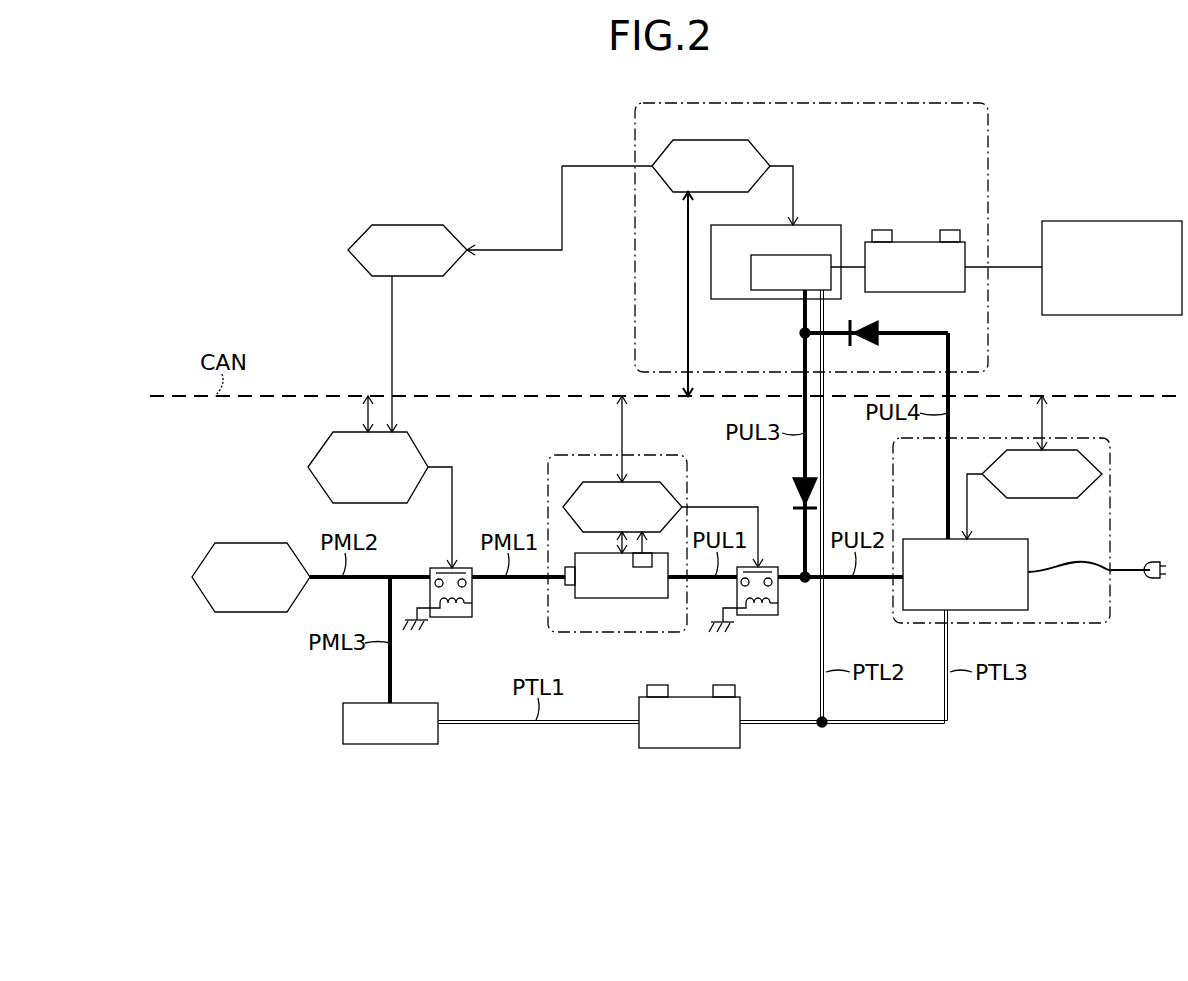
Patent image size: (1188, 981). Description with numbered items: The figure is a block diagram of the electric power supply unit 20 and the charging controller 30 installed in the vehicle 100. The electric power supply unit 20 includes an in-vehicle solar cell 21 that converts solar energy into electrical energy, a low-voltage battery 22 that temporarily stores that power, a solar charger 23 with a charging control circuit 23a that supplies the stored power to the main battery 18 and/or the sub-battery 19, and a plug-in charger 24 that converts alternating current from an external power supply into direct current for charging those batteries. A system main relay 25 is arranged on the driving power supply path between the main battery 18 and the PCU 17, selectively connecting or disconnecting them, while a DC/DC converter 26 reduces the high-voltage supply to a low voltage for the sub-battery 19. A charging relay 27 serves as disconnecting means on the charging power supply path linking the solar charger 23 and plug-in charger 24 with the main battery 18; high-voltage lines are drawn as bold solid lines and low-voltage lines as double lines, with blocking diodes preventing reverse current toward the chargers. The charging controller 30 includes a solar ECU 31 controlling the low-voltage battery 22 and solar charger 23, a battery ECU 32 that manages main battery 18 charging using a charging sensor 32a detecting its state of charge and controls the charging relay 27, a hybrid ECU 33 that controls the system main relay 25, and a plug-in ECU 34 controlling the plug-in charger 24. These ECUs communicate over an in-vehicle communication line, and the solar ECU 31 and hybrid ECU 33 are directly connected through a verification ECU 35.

The vehicle 100 is at (245, 763).
The PCU 17 is at (250, 543).
The main battery 18 is at (620, 598).
The sub-battery 19 is at (690, 748).
The electric power supply unit 20 is at (1100, 120).
The in-vehicle solar cell 21 is at (1138, 221).
The low-voltage battery 22 is at (914, 242).
The solar charger 23 is at (755, 225).
The charging control circuit 23a is at (770, 255).
The plug-in charger 24 is at (1028, 590).
The system main relay 25 is at (462, 617).
The DC/DC converter 26 is at (343, 727).
The charging relay 27 is at (763, 615).
The charging controller 30 is at (303, 163).
The solar ECU 31 is at (718, 142).
The battery ECU 32 is at (610, 482).
The charging sensor 32a is at (645, 567).
The hybrid ECU 33 is at (318, 455).
The plug-in ECU 34 is at (1040, 498).
The verification ECU 35 is at (417, 225).